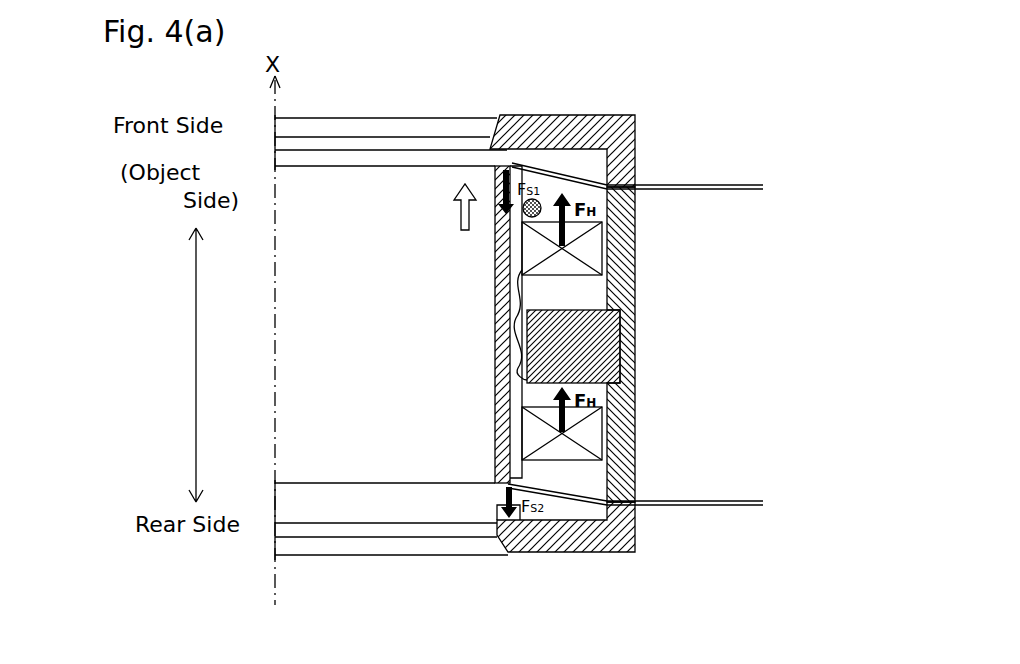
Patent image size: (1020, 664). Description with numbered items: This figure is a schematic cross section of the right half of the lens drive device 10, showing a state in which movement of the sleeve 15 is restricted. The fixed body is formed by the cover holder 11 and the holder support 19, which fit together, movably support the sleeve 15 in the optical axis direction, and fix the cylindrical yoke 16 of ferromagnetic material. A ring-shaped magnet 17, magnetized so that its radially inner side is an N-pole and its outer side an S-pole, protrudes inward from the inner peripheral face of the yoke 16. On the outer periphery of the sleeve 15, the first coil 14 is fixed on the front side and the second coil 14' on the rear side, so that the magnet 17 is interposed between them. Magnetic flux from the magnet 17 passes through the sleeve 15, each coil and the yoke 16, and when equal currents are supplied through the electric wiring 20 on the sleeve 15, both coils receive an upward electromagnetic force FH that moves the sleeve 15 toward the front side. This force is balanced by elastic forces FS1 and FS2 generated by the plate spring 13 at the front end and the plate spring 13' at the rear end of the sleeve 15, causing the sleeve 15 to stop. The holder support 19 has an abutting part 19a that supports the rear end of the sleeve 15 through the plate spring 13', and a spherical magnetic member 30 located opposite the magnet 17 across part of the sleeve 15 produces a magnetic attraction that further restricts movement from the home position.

The lens drive device 10 is at (594, 99).
The cover holder 11 is at (628, 127).
The plate spring 13 is at (637, 128).
The plate spring 13' is at (635, 541).
The first coil 14 is at (620, 244).
The second coil 14' is at (624, 426).
The sleeve 15 is at (500, 487).
The yoke 16 is at (626, 395).
The magnet 17 is at (622, 345).
The holder support 19 is at (619, 541).
The abutting part 19a is at (497, 518).
The electric wiring 20 is at (497, 362).
The magnetic member 30 is at (521, 215).